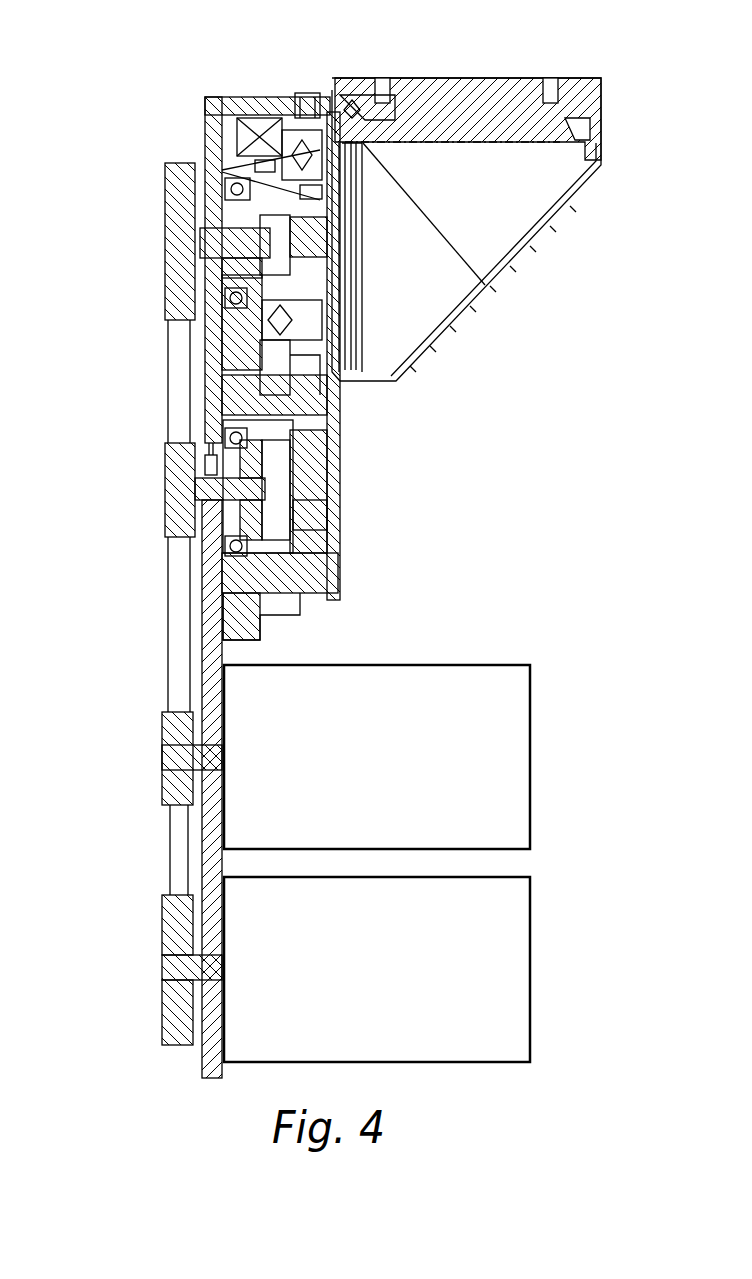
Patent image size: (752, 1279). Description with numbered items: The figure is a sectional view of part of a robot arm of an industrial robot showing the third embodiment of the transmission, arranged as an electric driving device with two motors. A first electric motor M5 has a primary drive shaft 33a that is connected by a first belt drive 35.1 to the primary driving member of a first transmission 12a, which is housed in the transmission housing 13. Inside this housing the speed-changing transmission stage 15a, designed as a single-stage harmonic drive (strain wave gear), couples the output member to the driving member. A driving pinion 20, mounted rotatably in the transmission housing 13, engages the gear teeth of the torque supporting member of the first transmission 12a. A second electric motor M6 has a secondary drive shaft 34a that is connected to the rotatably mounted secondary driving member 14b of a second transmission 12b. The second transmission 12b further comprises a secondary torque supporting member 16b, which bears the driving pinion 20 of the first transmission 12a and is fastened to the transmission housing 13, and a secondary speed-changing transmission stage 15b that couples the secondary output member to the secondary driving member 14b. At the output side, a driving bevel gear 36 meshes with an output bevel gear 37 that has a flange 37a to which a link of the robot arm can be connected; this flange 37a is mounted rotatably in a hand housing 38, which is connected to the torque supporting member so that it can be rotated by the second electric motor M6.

The transmission housing 13 is at (235, 97).
The hand housing 38 is at (350, 88).
The flange 37a is at (396, 80).
The output bevel gear 37 is at (456, 125).
The first transmission 12a is at (325, 232).
The driving pinion 20 is at (232, 366).
The first belt drive 35.1 is at (175, 368).
The driving bevel gear 36 is at (346, 312).
The speed-changing transmission stage 15a is at (280, 298).
The secondary driving member 14b is at (258, 455).
The second transmission 12b is at (325, 488).
The secondary torque supporting member 16b is at (315, 512).
The secondary speed-changing transmission stage 15b is at (270, 540).
The secondary drive shaft 34a is at (210, 756).
The second electric motor M6 is at (496, 770).
The primary drive shaft 33a is at (205, 968).
The first electric motor M5 is at (503, 972).